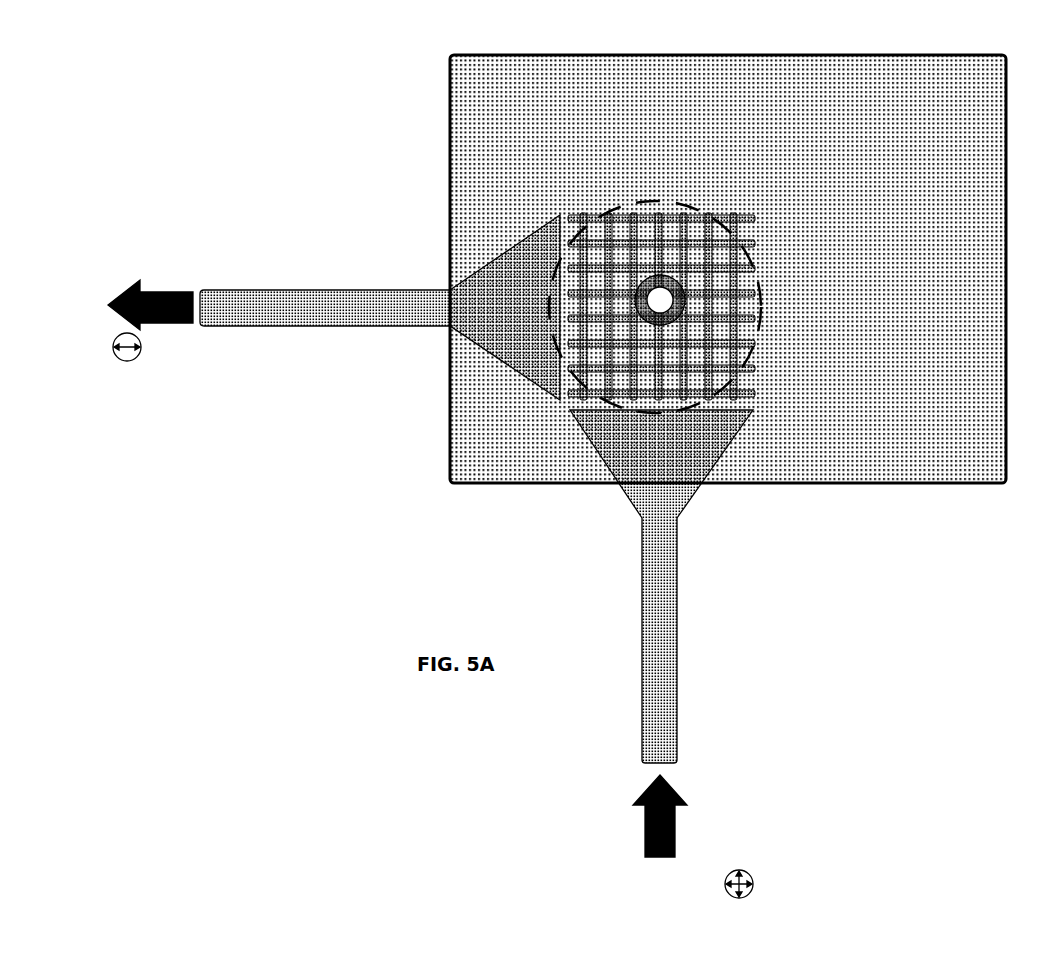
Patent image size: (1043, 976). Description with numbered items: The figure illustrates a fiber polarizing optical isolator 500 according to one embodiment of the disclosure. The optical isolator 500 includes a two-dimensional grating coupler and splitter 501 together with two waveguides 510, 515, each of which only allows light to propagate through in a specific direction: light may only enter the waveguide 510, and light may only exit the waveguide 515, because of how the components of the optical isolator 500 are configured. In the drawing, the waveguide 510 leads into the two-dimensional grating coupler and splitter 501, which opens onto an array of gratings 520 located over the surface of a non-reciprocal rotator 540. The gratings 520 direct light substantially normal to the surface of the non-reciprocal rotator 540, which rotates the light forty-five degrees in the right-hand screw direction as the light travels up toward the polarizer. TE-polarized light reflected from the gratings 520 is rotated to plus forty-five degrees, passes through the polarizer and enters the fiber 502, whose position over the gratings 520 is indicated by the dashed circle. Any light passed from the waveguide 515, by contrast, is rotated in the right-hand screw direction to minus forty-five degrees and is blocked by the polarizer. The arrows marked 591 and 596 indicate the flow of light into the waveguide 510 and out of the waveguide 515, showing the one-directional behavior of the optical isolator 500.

The optical isolator 500 is at (380, 134).
The 2D grating coupler and splitter 501 is at (592, 443).
The fiber 502 is at (622, 207).
The waveguide 510 is at (678, 709).
The waveguide 515 is at (263, 302).
The gratings 520 is at (755, 243).
The non-reciprocal rotator 540 is at (840, 485).
The inlet flow direction 591 is at (675, 855).
The outlet flow direction 596 is at (113, 348).